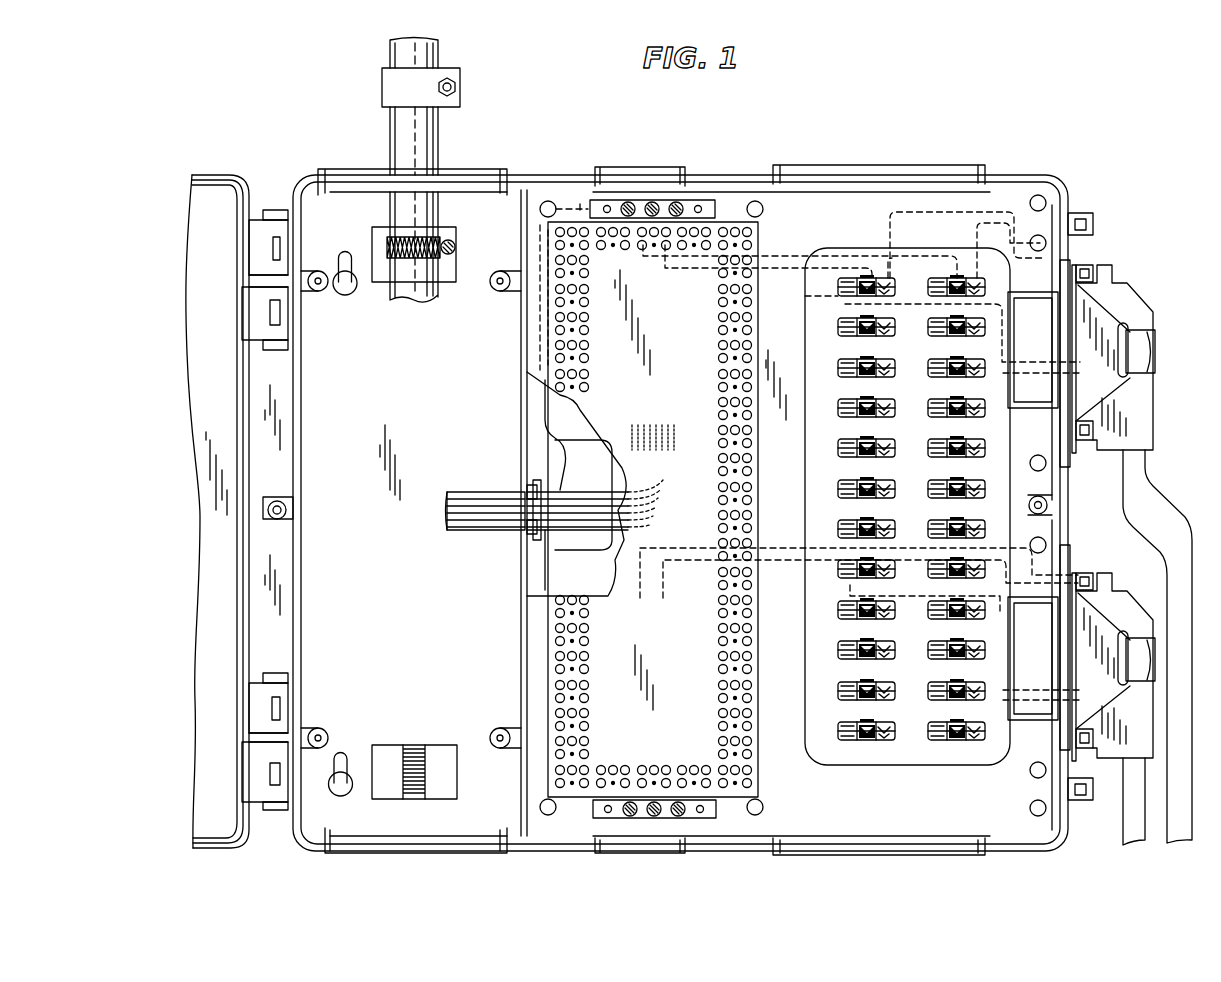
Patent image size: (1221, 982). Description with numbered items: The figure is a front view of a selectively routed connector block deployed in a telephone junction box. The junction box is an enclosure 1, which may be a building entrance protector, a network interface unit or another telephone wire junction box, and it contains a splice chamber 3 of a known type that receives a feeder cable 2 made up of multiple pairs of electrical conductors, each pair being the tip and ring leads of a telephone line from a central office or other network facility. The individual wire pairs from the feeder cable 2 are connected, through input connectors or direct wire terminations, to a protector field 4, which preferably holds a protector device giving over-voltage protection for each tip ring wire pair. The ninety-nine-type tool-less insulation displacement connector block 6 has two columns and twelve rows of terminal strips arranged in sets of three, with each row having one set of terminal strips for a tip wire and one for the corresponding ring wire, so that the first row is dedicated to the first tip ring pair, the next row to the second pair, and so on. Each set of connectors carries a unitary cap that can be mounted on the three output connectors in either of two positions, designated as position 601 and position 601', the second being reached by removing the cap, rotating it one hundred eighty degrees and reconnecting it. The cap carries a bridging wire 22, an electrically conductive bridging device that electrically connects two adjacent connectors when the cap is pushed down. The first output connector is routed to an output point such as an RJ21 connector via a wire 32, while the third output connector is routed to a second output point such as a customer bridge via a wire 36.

The enclosure 1 is at (636, 152).
The feeder cable 2 is at (393, 293).
The splice chamber 3 is at (333, 213).
The protector field 4 is at (759, 752).
The connector block 6 is at (869, 765).
The bridging wire 22 is at (870, 276).
The wire 32 is at (1023, 364).
The wire 36 is at (1027, 617).
The position 601 is at (908, 294).
The position 601' is at (905, 451).